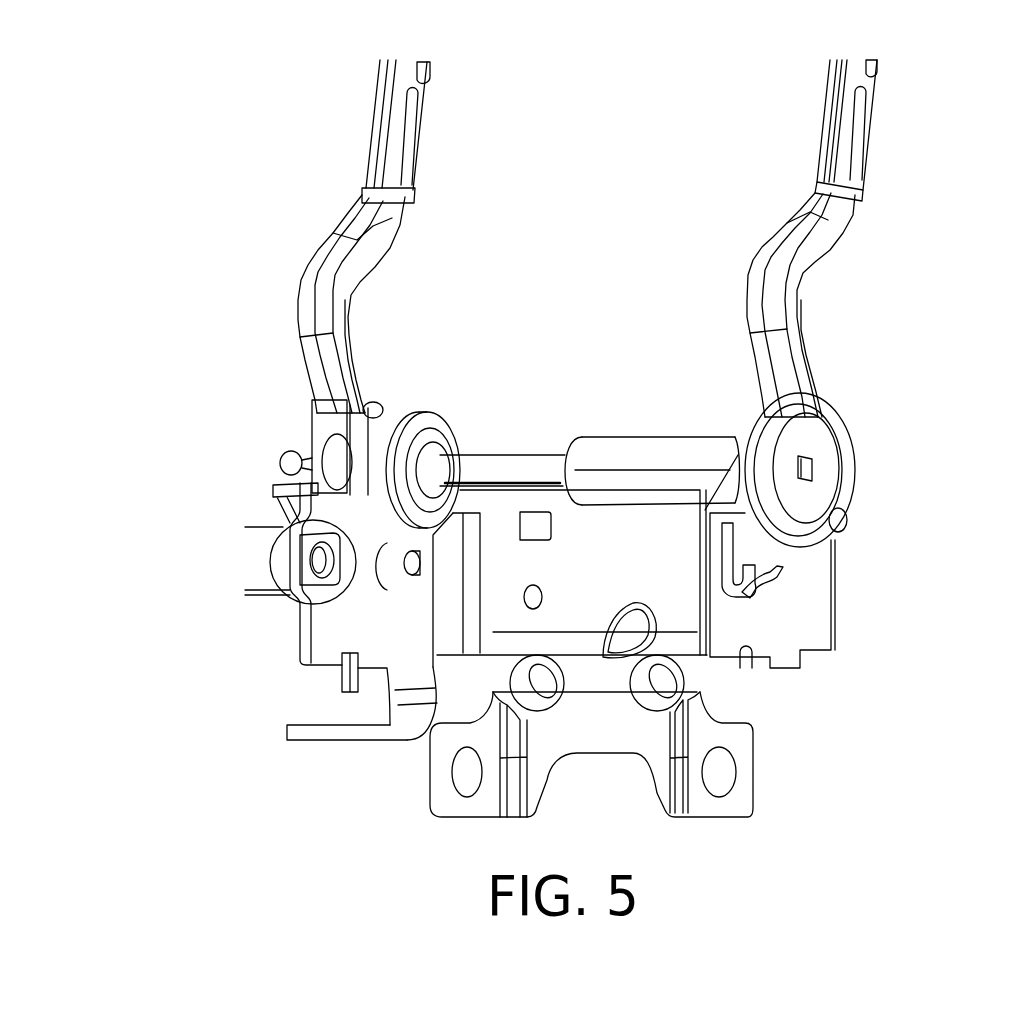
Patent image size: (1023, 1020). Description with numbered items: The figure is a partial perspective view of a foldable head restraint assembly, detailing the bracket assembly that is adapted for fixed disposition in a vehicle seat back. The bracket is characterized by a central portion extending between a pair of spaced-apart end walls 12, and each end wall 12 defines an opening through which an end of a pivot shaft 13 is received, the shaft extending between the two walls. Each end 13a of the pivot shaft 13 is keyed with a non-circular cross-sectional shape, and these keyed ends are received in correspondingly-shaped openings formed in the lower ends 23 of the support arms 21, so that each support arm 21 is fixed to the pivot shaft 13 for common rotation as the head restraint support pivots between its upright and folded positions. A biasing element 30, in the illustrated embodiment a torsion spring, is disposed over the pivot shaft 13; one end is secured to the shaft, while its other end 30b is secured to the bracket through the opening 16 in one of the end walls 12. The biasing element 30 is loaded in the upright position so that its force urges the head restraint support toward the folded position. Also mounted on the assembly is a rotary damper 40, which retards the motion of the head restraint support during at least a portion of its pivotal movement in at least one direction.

The end wall 12 is at (303, 636).
The pivot shaft 13 is at (522, 460).
The end of the pivot shaft 13a is at (818, 474).
The opening 16 is at (757, 556).
The support arm 21 is at (300, 268).
The lower end of the support arm 23 is at (830, 452).
The biasing element 30 is at (648, 440).
The end of the biasing element 30b is at (777, 582).
The rotary damper 40 is at (432, 399).